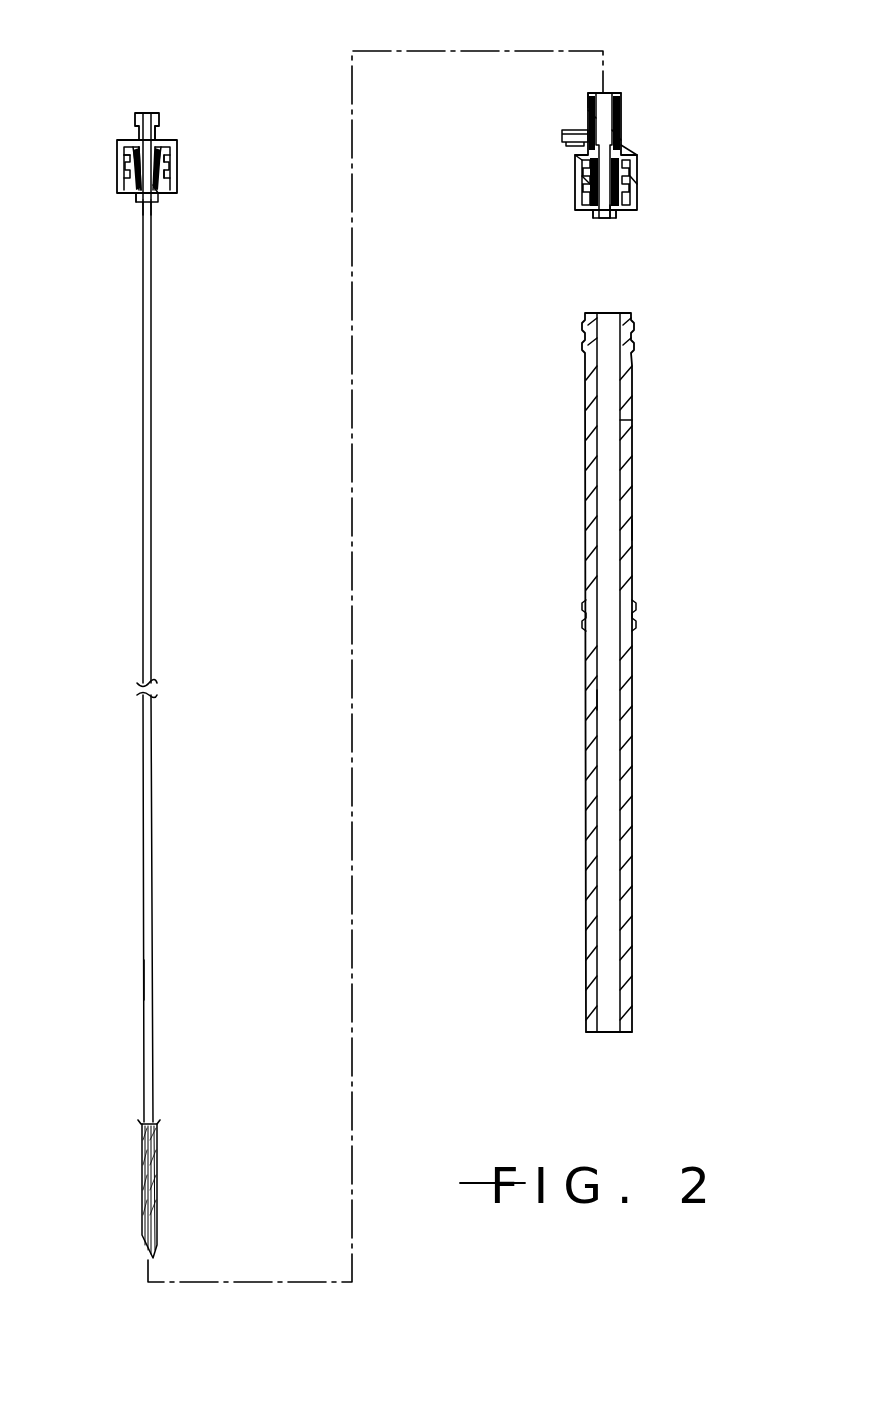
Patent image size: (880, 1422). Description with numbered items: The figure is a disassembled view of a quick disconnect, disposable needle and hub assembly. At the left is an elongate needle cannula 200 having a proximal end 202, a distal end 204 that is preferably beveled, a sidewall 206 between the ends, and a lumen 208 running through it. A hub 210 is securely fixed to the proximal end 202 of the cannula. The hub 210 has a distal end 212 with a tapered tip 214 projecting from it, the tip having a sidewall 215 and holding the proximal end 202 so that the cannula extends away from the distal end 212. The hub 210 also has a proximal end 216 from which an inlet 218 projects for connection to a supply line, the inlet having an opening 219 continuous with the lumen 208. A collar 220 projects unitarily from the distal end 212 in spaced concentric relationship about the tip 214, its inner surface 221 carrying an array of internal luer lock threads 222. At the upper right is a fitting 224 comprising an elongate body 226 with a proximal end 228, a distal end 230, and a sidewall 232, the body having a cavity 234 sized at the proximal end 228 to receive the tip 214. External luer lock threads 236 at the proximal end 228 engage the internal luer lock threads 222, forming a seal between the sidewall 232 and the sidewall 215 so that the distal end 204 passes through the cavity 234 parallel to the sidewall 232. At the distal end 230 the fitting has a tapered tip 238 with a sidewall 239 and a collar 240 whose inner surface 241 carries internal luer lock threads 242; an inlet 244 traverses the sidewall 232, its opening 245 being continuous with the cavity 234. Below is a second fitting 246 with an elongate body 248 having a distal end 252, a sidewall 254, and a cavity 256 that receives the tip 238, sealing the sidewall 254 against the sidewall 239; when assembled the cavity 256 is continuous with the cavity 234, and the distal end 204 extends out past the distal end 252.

The needle cannula 200 is at (167, 408).
The proximal end 202 is at (155, 213).
The distal end 204 is at (155, 1237).
The sidewall 206 is at (153, 903).
The lumen 208 is at (148, 990).
The hub 210 is at (184, 122).
The distal end 212 is at (127, 157).
The tip 214 is at (143, 200).
The sidewall 215 is at (140, 197).
The proximal end 216 is at (140, 156).
The inlet 218 is at (162, 125).
The opening 219 is at (150, 107).
The collar 220 is at (170, 180).
The inner surface 221 is at (163, 187).
The internal luer lock threads 222 is at (170, 160).
The fitting 224 is at (648, 106).
The elongate body 226 is at (621, 137).
The proximal end 228 is at (610, 92).
The distal end 230 is at (634, 150).
The sidewall 232 is at (588, 118).
The cavity 234 is at (613, 220).
The external luer lock threads 236 is at (588, 100).
The tip 238 is at (603, 220).
The sidewall 239 is at (594, 217).
The collar 240 is at (638, 183).
The inner surface 241 is at (621, 217).
The internal luer lock threads 242 is at (577, 190).
The inlet 244 is at (575, 150).
The opening 245 is at (567, 140).
The second fitting 246 is at (663, 642).
The elongate body 248 is at (633, 430).
The distal end 252 is at (628, 1033).
The sidewall 254 is at (635, 530).
The cavity 256 is at (612, 700).